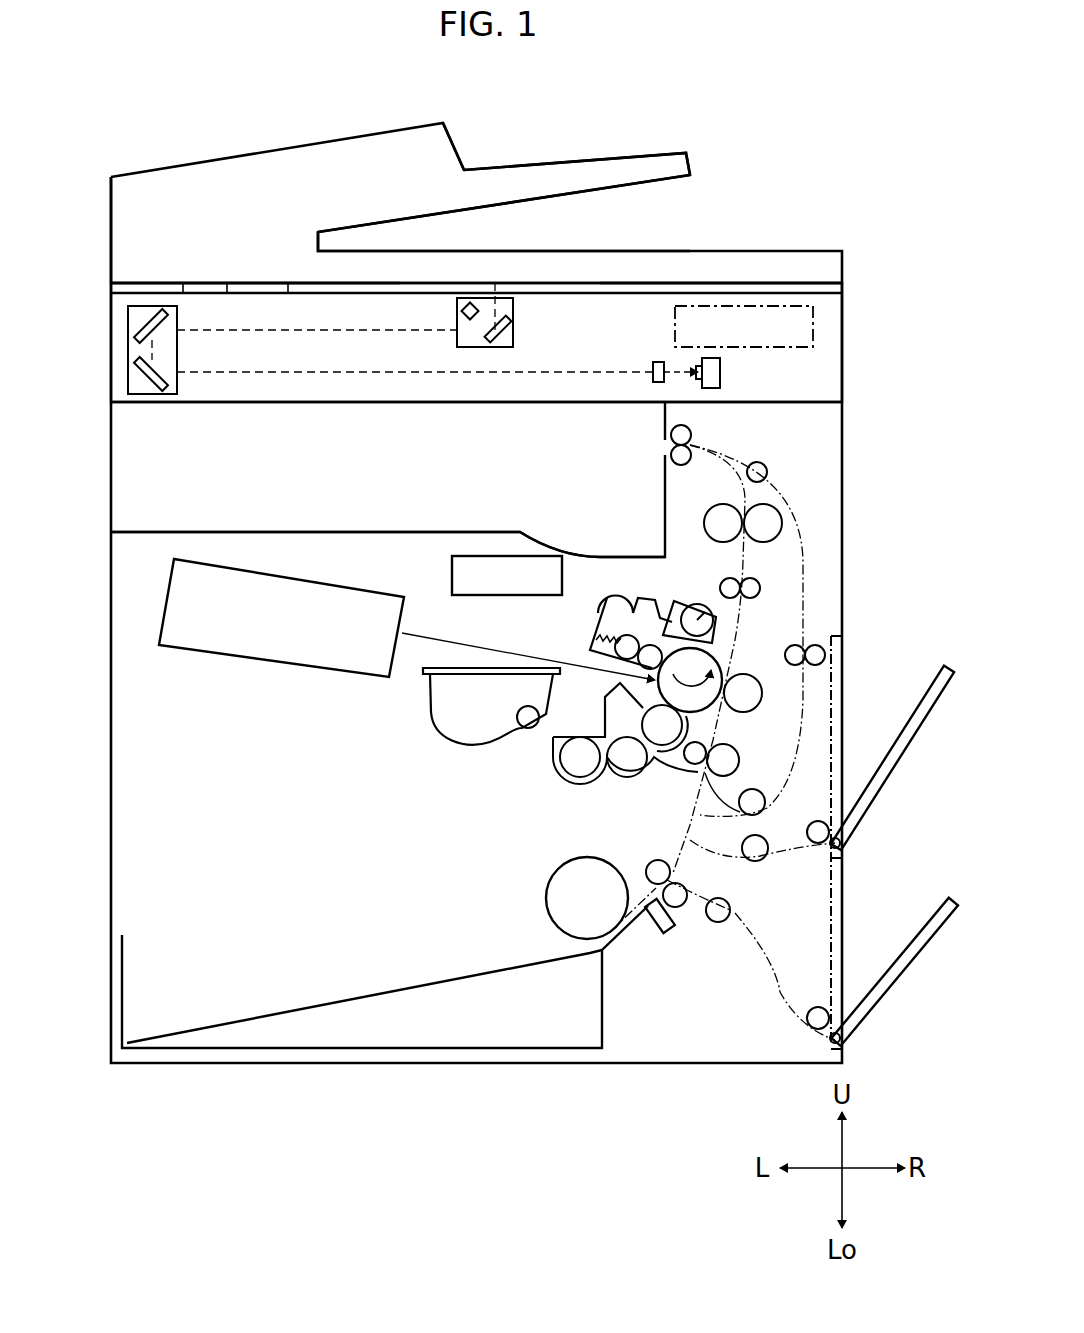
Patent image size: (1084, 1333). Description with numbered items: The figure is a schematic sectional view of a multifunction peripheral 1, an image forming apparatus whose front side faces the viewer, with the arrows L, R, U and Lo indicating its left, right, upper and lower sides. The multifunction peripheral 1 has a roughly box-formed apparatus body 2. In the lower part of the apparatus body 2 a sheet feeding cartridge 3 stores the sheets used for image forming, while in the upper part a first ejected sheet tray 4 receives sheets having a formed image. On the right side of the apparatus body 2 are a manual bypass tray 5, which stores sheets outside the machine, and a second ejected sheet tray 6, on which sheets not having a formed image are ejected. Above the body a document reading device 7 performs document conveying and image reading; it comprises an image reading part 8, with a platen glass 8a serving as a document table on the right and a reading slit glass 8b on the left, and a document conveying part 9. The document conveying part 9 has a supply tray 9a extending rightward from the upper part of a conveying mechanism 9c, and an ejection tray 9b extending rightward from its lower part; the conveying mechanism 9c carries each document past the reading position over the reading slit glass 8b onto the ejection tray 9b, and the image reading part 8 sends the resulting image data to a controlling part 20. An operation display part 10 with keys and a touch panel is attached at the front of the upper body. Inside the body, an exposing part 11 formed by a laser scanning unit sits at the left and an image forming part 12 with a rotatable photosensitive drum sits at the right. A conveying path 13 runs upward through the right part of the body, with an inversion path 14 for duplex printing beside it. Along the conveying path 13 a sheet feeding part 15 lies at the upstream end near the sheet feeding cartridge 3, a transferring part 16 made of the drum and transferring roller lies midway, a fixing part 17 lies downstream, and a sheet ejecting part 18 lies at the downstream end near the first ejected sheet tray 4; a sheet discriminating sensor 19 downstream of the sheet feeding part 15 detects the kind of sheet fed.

The multifunction peripheral 1 is at (88, 137).
The apparatus body 2 is at (108, 582).
The sheet feeding cartridge 3 is at (122, 985).
The first ejected sheet tray 4 is at (445, 532).
The manual bypass tray 5 is at (925, 685).
The second ejected sheet tray 6 is at (925, 905).
The document reading device 7 is at (732, 165).
The image reading part 8 is at (842, 347).
The platen glass 8a is at (785, 282).
The reading slit glass 8b is at (203, 283).
The document conveying part 9 is at (272, 150).
The supply tray 9a is at (603, 160).
The ejection tray 9b is at (603, 250).
The conveying mechanism 9c is at (152, 205).
The operation display part 10 is at (673, 320).
The exposing part 11 is at (237, 660).
The image forming part 12 is at (600, 795).
The conveying path 13 is at (683, 830).
The inversion path 14 is at (803, 590).
The sheet feeding part 15 is at (543, 932).
The transferring part 16 is at (735, 672).
The fixing part 17 is at (770, 494).
The sheet ejecting part 18 is at (700, 433).
The sheet discriminating sensor 19 is at (664, 932).
The controlling part 20 is at (452, 573).